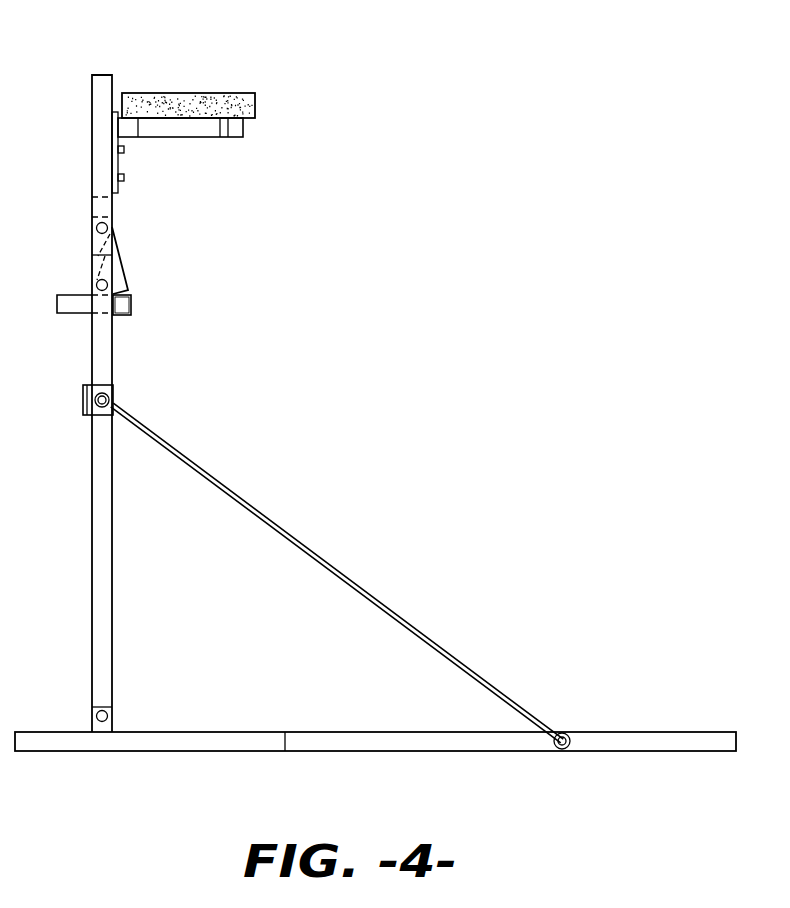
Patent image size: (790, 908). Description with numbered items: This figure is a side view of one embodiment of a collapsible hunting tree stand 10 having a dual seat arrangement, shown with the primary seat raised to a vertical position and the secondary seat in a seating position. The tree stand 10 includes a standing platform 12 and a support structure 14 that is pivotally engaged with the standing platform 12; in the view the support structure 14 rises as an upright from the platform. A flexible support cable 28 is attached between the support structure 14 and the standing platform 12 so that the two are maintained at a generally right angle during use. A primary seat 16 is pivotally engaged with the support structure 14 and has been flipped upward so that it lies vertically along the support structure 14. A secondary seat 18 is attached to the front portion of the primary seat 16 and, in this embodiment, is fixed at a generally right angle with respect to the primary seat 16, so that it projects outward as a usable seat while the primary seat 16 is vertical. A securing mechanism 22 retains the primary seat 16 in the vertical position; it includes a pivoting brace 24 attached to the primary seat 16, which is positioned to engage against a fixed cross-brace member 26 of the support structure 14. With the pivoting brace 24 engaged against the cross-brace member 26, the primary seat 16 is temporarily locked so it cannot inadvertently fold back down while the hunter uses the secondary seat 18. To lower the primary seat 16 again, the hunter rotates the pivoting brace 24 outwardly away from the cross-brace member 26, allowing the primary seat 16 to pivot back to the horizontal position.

The collapsible hunting tree stand 10 is at (392, 290).
The standing platform 12 is at (622, 738).
The support structure 14 is at (113, 600).
The primary seat 16 is at (100, 102).
The secondary seat 18 is at (205, 102).
The securing mechanism 22 is at (152, 287).
The pivoting brace 24 is at (125, 258).
The fixed cross-brace member 26 is at (125, 317).
The flexible support cables 28 is at (315, 553).